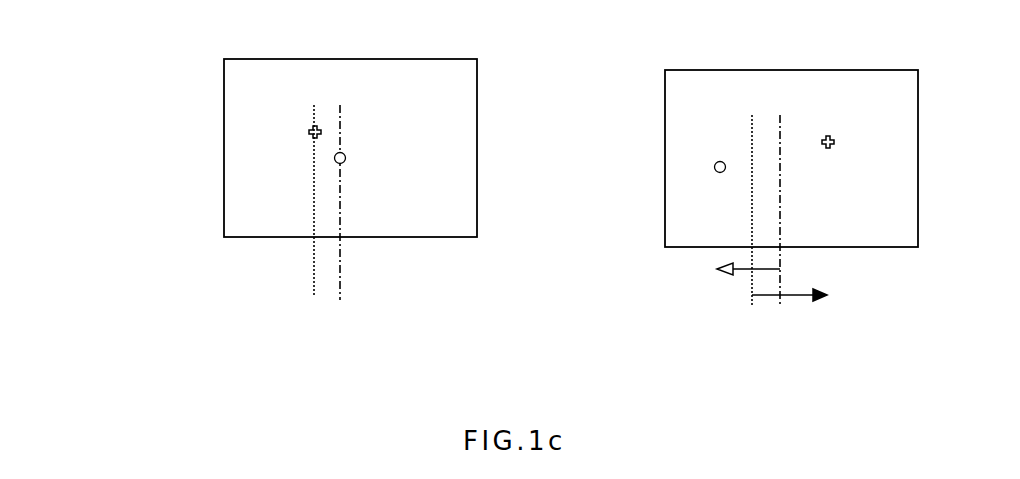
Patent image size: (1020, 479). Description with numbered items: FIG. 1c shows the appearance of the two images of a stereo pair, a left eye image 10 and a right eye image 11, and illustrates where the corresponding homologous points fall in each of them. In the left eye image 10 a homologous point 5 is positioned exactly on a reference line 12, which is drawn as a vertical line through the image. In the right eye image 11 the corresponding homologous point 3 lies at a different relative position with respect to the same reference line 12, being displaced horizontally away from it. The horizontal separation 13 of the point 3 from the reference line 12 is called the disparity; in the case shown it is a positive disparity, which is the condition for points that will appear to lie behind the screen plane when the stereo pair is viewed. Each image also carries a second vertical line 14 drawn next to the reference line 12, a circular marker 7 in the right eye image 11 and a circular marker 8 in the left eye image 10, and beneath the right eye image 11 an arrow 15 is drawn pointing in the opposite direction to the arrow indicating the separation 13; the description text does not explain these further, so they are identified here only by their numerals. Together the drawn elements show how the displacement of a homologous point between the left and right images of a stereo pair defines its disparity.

The homologous point 3 is at (835, 142).
The homologous point 5 is at (309, 132).
The circle marker (actual position, second image) 7 is at (714, 167).
The circle marker (actual position, first image) 8 is at (341, 164).
The left eye image 10 is at (352, 59).
The right eye image 11 is at (790, 70).
The reference line 12 is at (318, 267).
The separation 13 is at (826, 297).
The dash-dot axis line 14 is at (340, 300).
The leftward displacement arrow 15 is at (716, 271).